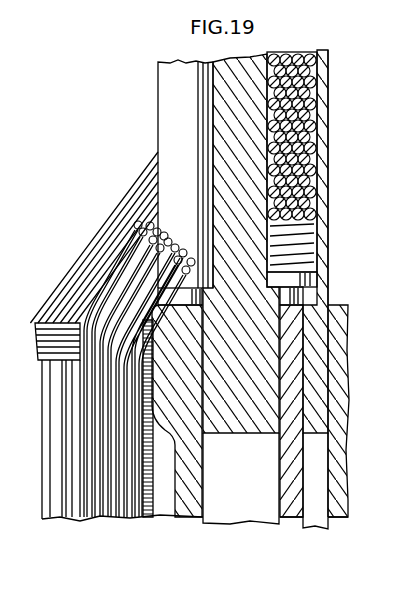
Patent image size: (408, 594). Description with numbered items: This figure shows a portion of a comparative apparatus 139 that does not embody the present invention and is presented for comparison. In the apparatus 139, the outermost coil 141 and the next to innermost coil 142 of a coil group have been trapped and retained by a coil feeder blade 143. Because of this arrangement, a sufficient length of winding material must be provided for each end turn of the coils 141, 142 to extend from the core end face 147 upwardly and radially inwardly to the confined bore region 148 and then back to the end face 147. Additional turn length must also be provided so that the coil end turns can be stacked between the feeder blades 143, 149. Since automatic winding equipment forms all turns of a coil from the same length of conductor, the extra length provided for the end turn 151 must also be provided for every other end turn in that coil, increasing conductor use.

The apparatus 139 is at (104, 118).
The outermost coil 141 is at (148, 183).
The next to innermost coil 142 is at (108, 220).
The coil feeder blade 143 is at (257, 63).
The core end face 147 is at (64, 323).
The confined bore region 148 is at (313, 50).
The feeder blade 149 is at (323, 170).
The end turn 151 is at (302, 55).